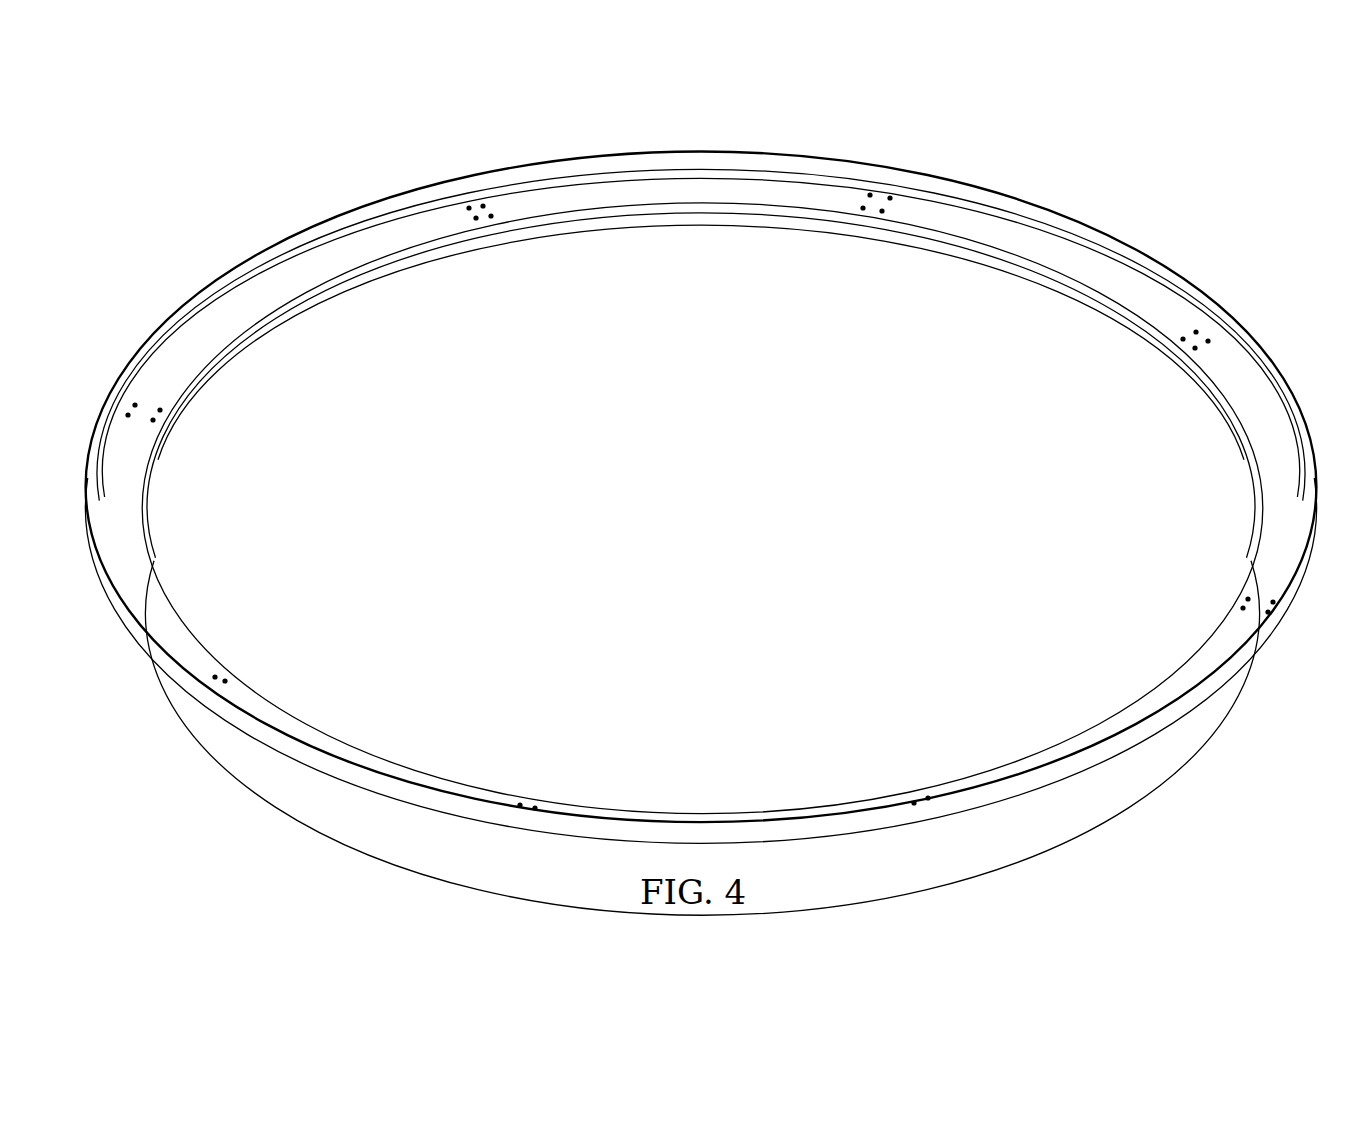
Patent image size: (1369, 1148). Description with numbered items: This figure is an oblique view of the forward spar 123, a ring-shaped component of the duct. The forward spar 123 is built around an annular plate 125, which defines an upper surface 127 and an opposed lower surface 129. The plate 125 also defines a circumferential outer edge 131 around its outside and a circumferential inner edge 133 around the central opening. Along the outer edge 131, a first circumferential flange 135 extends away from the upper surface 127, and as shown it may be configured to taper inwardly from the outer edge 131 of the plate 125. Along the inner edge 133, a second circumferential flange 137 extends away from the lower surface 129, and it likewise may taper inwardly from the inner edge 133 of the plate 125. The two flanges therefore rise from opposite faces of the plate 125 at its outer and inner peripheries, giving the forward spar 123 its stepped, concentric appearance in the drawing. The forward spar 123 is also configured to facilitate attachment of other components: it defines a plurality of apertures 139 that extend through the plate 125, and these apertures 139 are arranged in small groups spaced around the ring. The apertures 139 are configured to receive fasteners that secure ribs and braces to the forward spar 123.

The forward spar 123 is at (700, 503).
The annular plate 125 is at (263, 290).
The upper surface 127 is at (318, 745).
The lower surface 129 is at (283, 757).
The circumferential outer edge 131 is at (350, 232).
The circumferential inner edge 133 is at (284, 309).
The first circumferential flange 135 is at (196, 302).
The second circumferential flange 137 is at (208, 386).
The apertures 139 is at (864, 207).